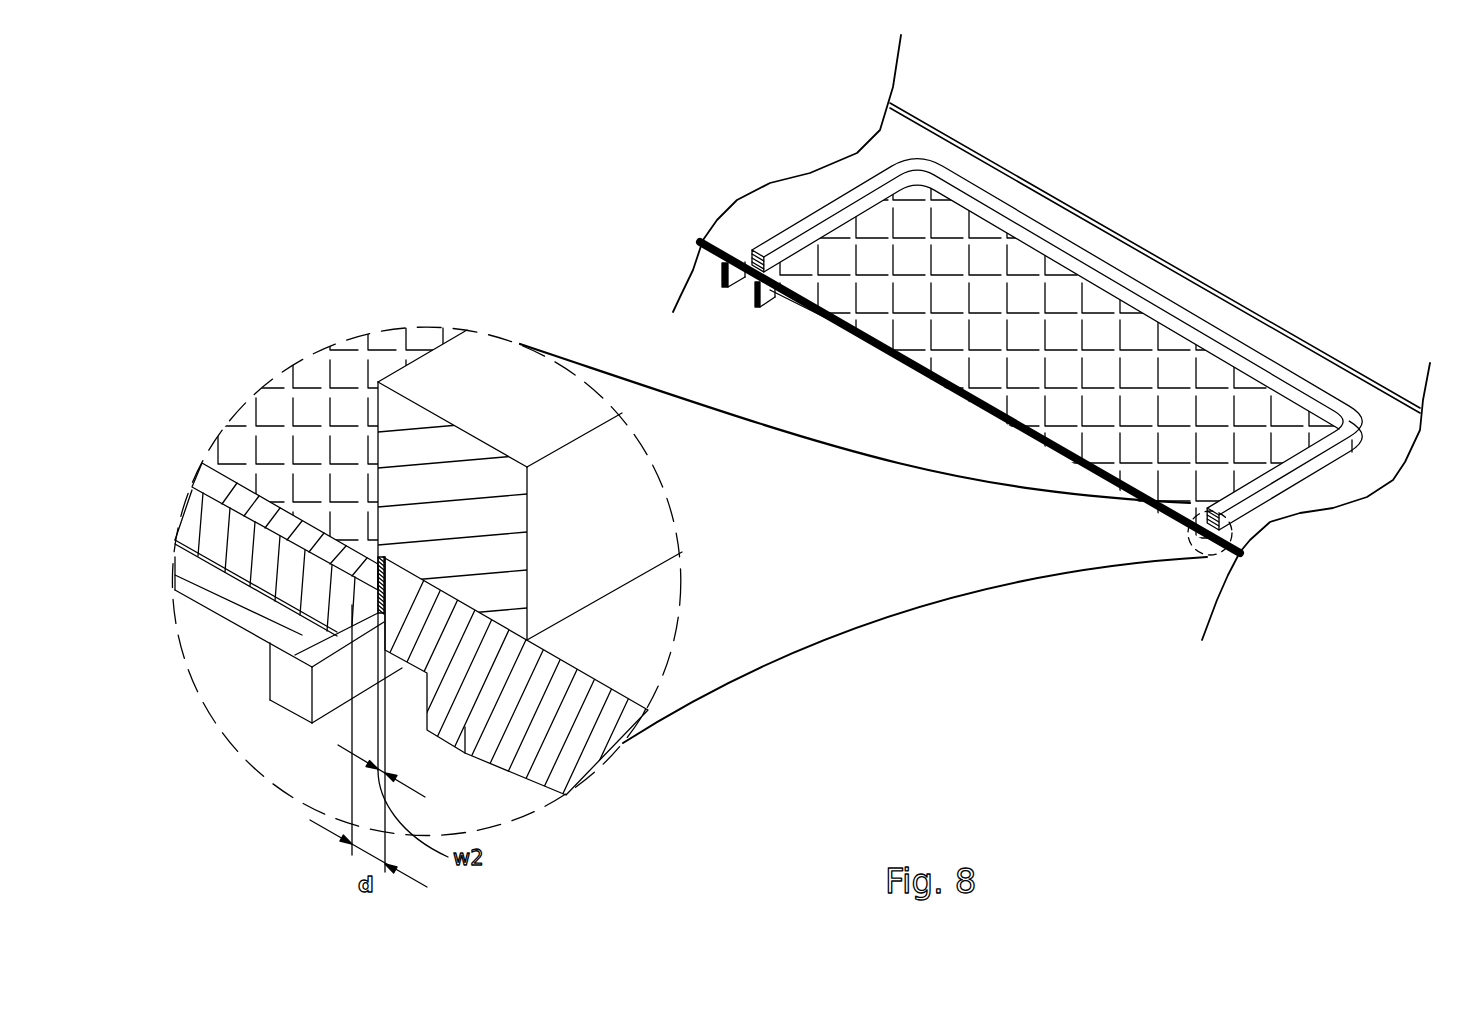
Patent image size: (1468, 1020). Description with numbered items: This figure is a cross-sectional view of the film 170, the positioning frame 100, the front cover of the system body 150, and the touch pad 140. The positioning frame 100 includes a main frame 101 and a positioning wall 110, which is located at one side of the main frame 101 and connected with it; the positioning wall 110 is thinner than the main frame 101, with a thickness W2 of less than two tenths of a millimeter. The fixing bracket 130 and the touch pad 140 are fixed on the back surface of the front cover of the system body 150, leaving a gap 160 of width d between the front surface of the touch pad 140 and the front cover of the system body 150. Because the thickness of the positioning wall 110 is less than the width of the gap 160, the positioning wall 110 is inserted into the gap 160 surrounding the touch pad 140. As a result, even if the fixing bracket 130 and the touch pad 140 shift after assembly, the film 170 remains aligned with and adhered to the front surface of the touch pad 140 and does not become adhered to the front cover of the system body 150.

The positioning frame 100 is at (435, 453).
The main frame 101 is at (543, 407).
The positioning wall 110 is at (380, 590).
The fixing bracket 130 is at (202, 583).
The touch pad 140 is at (197, 528).
The front cover of the system body 150 is at (597, 732).
The gap 160 is at (372, 602).
The film 170 is at (213, 483).